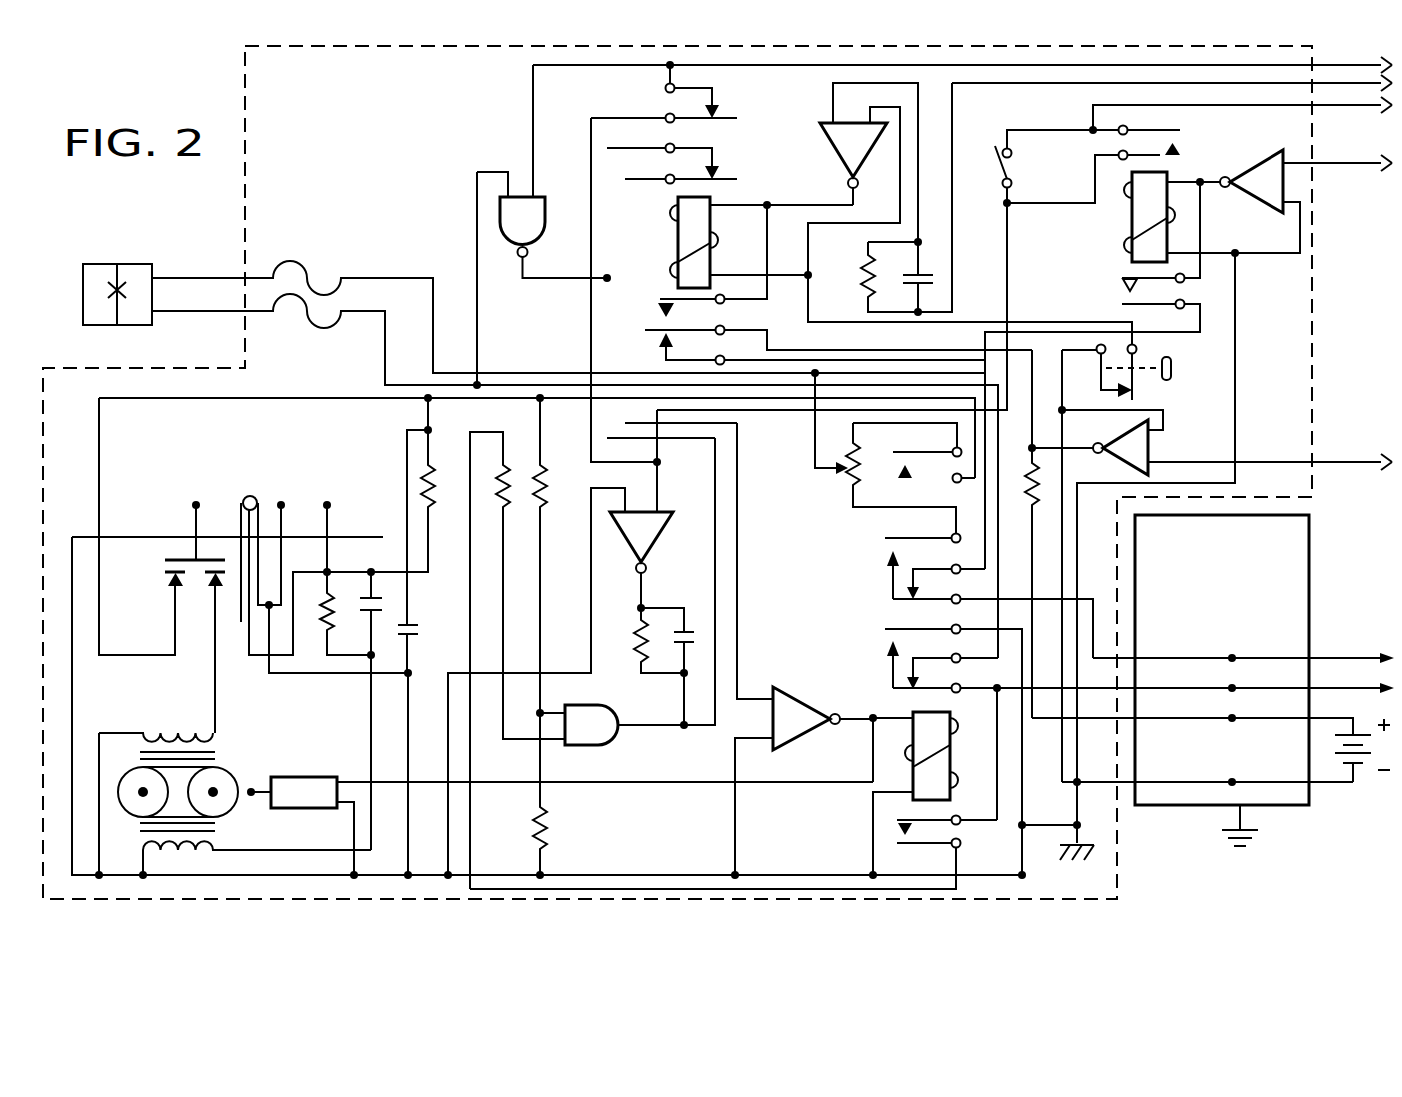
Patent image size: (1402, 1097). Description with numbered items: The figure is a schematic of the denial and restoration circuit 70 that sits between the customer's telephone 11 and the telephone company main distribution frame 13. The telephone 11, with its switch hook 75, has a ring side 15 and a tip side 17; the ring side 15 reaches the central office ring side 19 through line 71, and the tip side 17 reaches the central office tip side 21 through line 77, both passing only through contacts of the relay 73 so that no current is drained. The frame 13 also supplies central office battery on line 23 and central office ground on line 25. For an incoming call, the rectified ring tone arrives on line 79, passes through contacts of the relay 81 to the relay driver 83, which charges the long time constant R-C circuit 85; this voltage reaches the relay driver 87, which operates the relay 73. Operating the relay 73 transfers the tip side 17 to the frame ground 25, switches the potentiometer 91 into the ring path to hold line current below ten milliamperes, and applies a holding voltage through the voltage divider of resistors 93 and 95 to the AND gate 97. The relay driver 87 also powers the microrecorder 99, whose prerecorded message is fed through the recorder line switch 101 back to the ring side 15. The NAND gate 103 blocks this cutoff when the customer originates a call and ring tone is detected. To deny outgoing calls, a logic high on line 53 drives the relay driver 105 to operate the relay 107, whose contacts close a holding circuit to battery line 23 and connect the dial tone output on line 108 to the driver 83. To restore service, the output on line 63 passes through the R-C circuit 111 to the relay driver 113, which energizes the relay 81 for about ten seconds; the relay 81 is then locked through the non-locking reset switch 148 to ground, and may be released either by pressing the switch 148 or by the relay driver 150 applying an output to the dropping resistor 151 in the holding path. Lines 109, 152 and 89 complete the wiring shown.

The customer's telephone 11 is at (100, 262).
The switch hook 75 is at (123, 290).
The denial and restoration circuit 70 is at (245, 203).
The ring side 15 is at (402, 278).
The tip side 17 is at (355, 318).
The NAND gate 103 is at (540, 217).
The relay driver 113 is at (826, 137).
The relay 81 is at (957, 213).
The line 79 is at (1000, 65).
The line 63 is at (1097, 83).
The line 108 is at (1253, 105).
The switch 109 is at (995, 165).
The relay 107 is at (1143, 213).
The relay driver 105 is at (1266, 190).
The line 53 is at (1375, 165).
The long time constant R-C circuit 111 is at (905, 268).
The non-locking reset switch 148 is at (1172, 375).
The relay driver 150 is at (1148, 453).
The dropping resistor 151 is at (1045, 488).
The lead 152 is at (1275, 458).
The recorder line switch 101 is at (166, 565).
The resistor 93 is at (548, 504).
The relay driver 83 is at (654, 526).
The long time constant R-C circuit 85 is at (640, 637).
The potentiometer 91 is at (842, 477).
The line 71 is at (1093, 594).
The main distribution frame 13 is at (1310, 574).
The ring side 19 is at (1340, 658).
The tip side 21 is at (1335, 690).
The line 23 is at (1290, 720).
The line 25 is at (1328, 783).
The microrecorder 99 is at (226, 778).
The AND gate 97 is at (603, 735).
The relay driver 87 is at (792, 716).
The relay 73 is at (935, 758).
The line 77 is at (1093, 690).
The ground lead 89 is at (1095, 785).
The resistor 95 is at (548, 830).